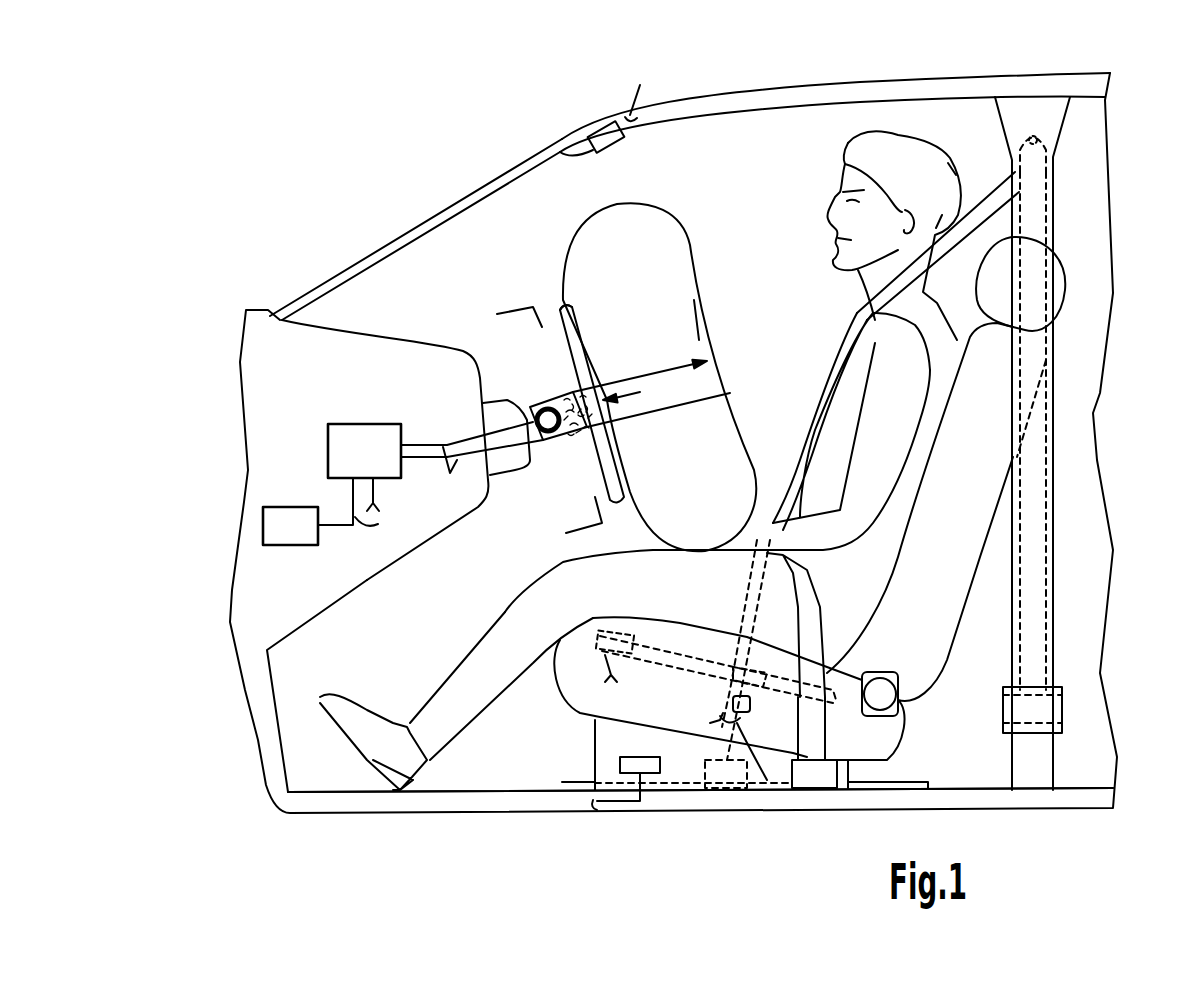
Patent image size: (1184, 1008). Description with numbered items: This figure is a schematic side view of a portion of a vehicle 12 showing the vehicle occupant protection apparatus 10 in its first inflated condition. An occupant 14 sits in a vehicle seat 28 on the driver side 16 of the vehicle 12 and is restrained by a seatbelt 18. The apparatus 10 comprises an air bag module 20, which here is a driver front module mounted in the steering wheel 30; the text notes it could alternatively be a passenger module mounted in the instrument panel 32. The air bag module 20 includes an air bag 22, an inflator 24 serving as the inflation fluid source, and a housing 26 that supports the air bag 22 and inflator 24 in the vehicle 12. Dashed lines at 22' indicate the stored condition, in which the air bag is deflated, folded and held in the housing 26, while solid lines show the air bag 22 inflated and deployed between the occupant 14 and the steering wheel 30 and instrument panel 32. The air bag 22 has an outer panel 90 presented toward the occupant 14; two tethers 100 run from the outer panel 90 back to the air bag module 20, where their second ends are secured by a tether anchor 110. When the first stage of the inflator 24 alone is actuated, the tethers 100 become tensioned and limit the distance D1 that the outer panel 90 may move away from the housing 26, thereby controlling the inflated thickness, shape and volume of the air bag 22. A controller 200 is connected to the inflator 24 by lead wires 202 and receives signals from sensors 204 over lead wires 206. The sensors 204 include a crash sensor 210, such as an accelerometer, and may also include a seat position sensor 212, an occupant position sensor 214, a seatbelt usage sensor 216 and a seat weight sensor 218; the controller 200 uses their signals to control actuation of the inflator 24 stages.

The vehicle occupant protection apparatus 10 is at (492, 290).
The vehicle 12 is at (420, 150).
The occupant 14 is at (805, 208).
The driver side 16 is at (639, 854).
The seatbelt 18 is at (983, 213).
The air bag module 20 is at (565, 460).
The air bag 22 is at (659, 377).
The stored condition of the air bag 22' is at (624, 364).
The inflator 24 is at (533, 417).
The housing 26 is at (535, 405).
The vehicle seat 28 is at (960, 503).
The steering wheel 30 is at (560, 308).
The instrument panel 32 is at (410, 345).
The outer panel 90 is at (697, 304).
The tethers 100 is at (640, 380).
The tether anchor 110 is at (572, 393).
The controller 200 is at (357, 440).
The lead wires 202 is at (472, 463).
The sensors 204 is at (647, 768).
The lead wires 206 is at (793, 837).
The crash sensor 210 is at (285, 525).
The seat position sensor 212 is at (603, 820).
The occupant position sensor 214 is at (598, 128).
The seatbelt usage sensor 216 is at (730, 703).
The seat weight sensor 218 is at (628, 648).
The distance D1 is at (683, 383).